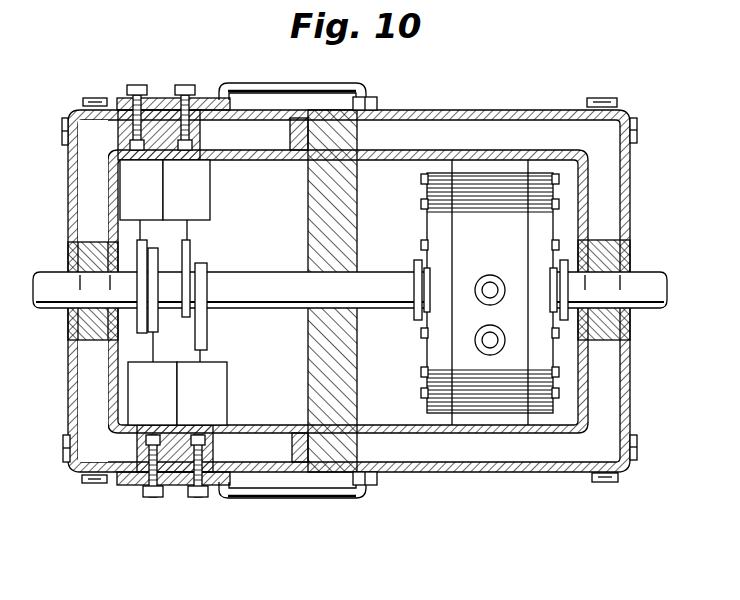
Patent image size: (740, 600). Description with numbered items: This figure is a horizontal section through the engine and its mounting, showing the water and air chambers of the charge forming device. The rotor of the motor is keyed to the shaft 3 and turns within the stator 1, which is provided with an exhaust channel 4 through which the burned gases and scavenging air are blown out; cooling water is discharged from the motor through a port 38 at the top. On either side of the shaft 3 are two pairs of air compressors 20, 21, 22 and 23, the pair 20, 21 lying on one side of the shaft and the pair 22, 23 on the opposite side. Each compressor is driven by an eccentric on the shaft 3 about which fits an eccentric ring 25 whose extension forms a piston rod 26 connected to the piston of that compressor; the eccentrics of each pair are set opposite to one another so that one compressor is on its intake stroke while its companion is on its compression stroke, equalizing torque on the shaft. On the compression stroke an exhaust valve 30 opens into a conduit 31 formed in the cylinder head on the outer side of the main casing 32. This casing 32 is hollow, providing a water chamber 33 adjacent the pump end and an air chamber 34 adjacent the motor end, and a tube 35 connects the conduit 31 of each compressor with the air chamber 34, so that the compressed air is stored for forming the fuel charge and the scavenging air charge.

The stator 1 is at (491, 292).
The shaft 3 is at (254, 270).
The exhaust channel 4 is at (492, 336).
The air compressor 20 is at (186, 190).
The air compressor 21 is at (141, 190).
The air compressor 22 is at (202, 393).
The air compressor 23 is at (152, 393).
The eccentric ring 25 is at (207, 329).
The piston rod 26 is at (158, 345).
The exhaust valve 30 is at (252, 133).
The conduit 31 is at (160, 102).
The main casing 32 is at (68, 167).
The water chamber 33 is at (93, 291).
The air chamber 34 is at (348, 278).
The tube 35 is at (298, 83).
The port 38 is at (490, 277).